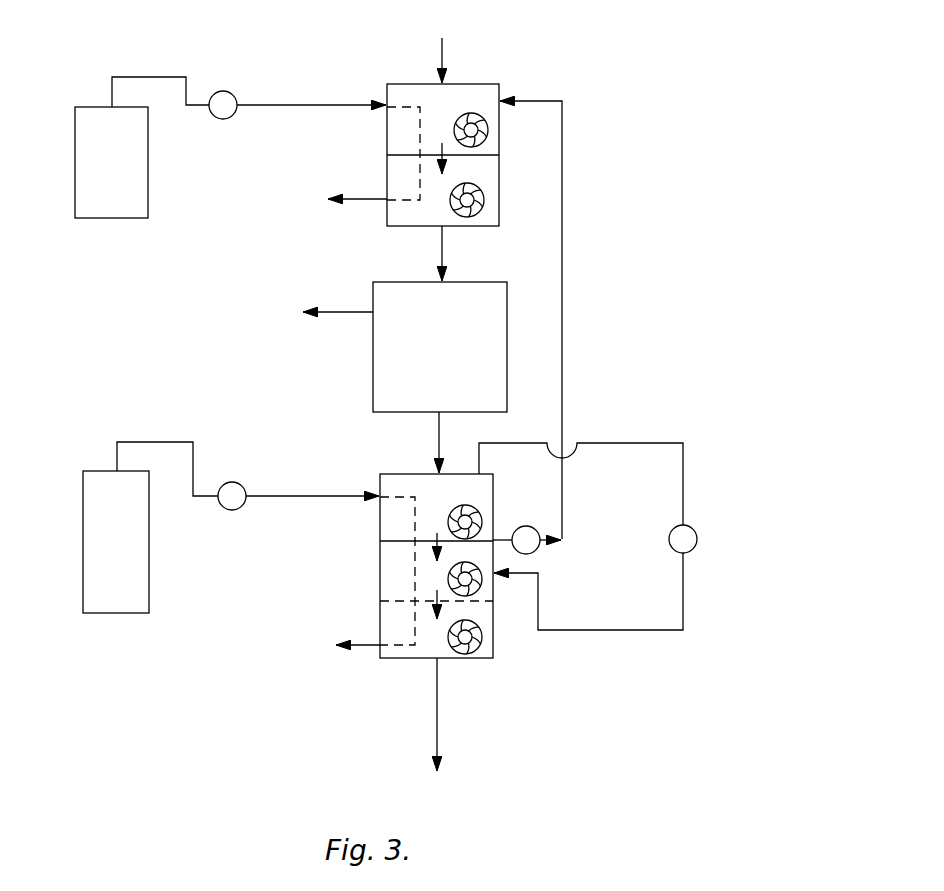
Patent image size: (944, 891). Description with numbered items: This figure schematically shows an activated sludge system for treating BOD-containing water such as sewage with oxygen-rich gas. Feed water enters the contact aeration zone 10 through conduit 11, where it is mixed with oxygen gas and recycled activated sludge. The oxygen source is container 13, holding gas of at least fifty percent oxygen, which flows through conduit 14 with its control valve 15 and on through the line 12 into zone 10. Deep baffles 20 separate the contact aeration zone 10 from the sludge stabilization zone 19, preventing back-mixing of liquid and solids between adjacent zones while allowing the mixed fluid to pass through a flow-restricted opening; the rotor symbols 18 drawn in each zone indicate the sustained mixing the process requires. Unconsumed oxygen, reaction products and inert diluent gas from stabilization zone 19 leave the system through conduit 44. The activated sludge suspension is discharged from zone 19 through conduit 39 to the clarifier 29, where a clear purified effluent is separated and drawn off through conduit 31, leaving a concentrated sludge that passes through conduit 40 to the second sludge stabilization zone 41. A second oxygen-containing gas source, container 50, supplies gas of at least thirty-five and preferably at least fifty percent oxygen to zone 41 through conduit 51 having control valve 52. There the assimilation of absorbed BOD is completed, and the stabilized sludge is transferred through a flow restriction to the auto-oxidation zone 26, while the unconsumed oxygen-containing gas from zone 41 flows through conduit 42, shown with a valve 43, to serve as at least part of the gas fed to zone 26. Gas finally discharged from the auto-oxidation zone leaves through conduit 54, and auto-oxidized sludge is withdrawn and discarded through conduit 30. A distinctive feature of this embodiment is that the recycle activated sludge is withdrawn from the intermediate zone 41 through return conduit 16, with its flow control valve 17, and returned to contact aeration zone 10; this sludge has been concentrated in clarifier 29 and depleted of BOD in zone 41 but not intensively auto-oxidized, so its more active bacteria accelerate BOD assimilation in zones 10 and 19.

The contact aeration zone 10 is at (395, 140).
The conduit 11 is at (440, 49).
The feed line 12 is at (313, 105).
The container 13 is at (87, 169).
The conduit 14 is at (142, 77).
The control valve 15 is at (225, 91).
The return conduit 16 is at (564, 293).
The flow control valve 17 is at (528, 526).
The agitator 18 is at (455, 129).
The sludge stabilization zone 19 is at (487, 183).
The deep baffles 20 is at (492, 153).
The auto-oxidation zone 26 is at (393, 580).
The clarification zone 29 is at (390, 293).
The conduit 30 is at (433, 713).
The conduit 31 is at (338, 316).
The conduit 39 is at (439, 253).
The conduit 40 is at (435, 439).
The second sludge stabilization zone 41 is at (393, 524).
The conduit 42 is at (625, 443).
The valve 43 is at (697, 539).
The conduit 44 is at (357, 205).
The container 50 is at (93, 552).
The conduit 51 is at (301, 496).
The control valve 52 is at (233, 482).
The conduit 54 is at (367, 645).